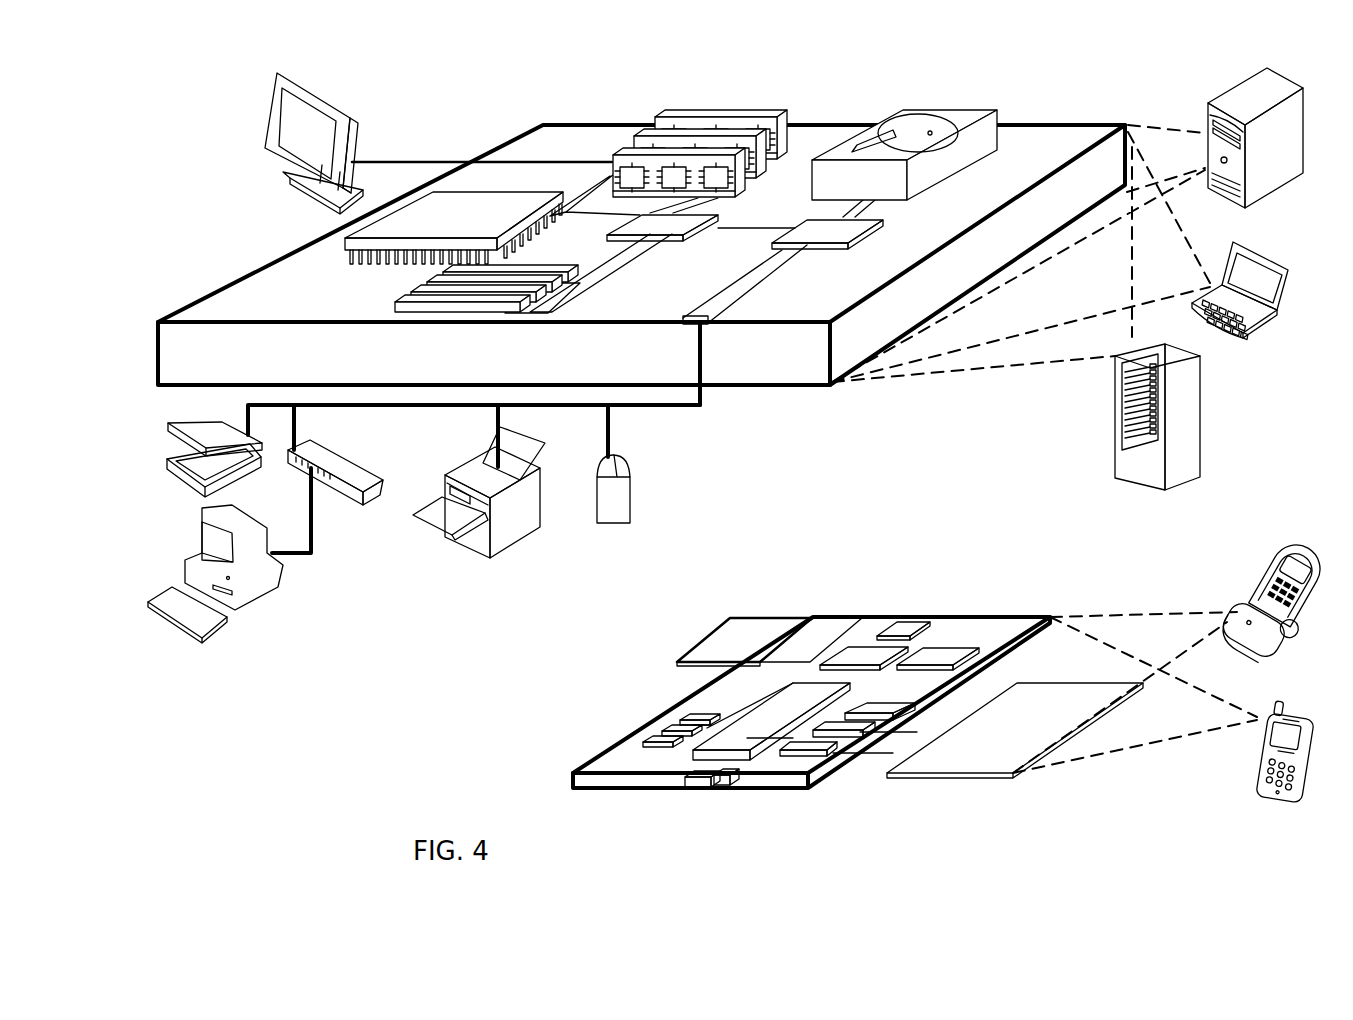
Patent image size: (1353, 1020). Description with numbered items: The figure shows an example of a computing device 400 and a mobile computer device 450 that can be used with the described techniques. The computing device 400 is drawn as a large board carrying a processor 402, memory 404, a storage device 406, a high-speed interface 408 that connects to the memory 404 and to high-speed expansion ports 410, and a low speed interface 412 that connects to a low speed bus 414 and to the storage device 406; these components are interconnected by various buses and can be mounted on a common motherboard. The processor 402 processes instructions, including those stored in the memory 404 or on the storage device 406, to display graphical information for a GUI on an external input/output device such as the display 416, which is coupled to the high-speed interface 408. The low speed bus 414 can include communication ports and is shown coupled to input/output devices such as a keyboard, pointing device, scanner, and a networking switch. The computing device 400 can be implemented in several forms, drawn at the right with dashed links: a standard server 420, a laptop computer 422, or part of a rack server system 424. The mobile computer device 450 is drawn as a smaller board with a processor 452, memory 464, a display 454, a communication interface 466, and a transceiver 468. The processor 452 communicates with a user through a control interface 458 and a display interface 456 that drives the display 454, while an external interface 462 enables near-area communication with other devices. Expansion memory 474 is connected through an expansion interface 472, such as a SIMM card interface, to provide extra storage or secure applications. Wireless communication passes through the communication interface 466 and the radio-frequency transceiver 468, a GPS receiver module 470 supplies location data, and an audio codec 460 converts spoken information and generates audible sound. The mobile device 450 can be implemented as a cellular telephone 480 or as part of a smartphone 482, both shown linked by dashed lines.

The computing device 400 is at (469, 99).
The processor 402 is at (343, 248).
The memory 404 is at (666, 116).
The storage device 406 is at (891, 108).
The high-speed interface 408 is at (638, 226).
The high-speed expansion ports 410 is at (413, 290).
The low speed interface 412 is at (828, 230).
The low speed bus 414 is at (703, 325).
The display 416 is at (270, 82).
The standard server 420 is at (1208, 110).
The laptop computer 422 is at (1233, 249).
The rack server system 424 is at (1116, 448).
The mobile computer device 450 is at (795, 598).
The processor 452 is at (750, 762).
The display 454 is at (1013, 775).
The display interface 456 is at (820, 758).
The control interface 458 is at (865, 740).
The audio codec 460 is at (868, 720).
The external interface 462 is at (712, 777).
The memory 464 is at (658, 740).
The communication interface 466 is at (860, 653).
The transceiver 468 is at (940, 653).
The GPS receiver module 470 is at (897, 630).
The expansion interface 472 is at (800, 628).
The expansion memory 474 is at (724, 630).
The cellular telephone 480 is at (1278, 560).
The smartphone 482 is at (1268, 696).